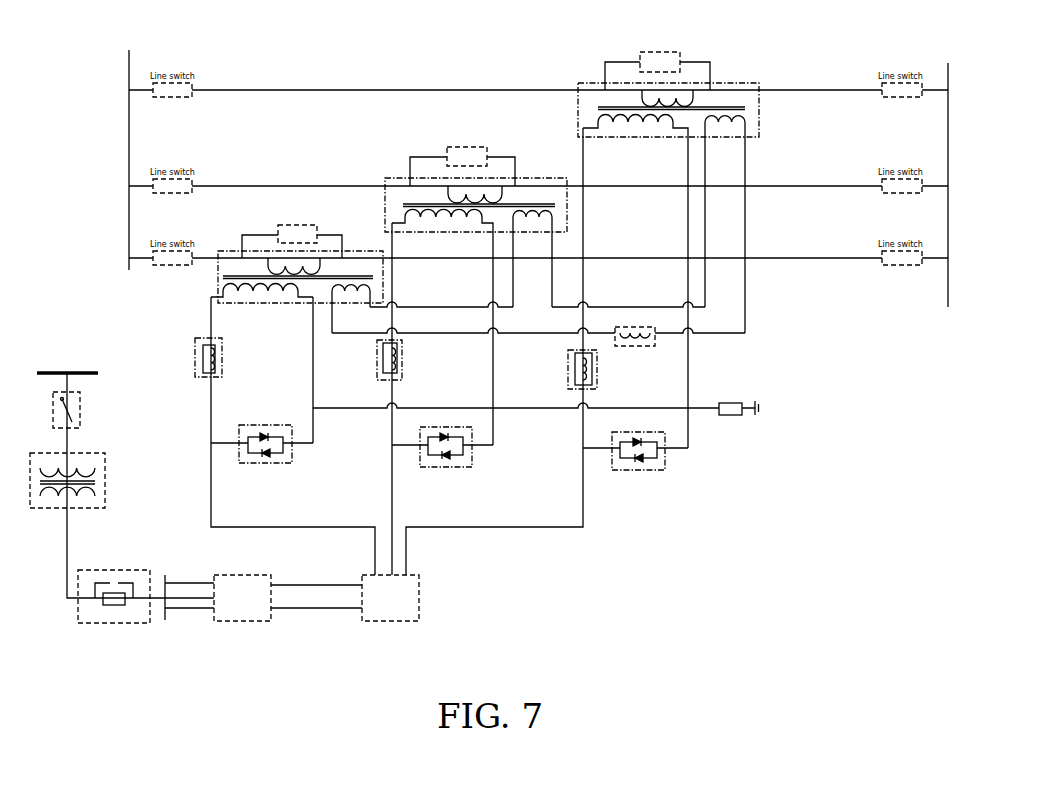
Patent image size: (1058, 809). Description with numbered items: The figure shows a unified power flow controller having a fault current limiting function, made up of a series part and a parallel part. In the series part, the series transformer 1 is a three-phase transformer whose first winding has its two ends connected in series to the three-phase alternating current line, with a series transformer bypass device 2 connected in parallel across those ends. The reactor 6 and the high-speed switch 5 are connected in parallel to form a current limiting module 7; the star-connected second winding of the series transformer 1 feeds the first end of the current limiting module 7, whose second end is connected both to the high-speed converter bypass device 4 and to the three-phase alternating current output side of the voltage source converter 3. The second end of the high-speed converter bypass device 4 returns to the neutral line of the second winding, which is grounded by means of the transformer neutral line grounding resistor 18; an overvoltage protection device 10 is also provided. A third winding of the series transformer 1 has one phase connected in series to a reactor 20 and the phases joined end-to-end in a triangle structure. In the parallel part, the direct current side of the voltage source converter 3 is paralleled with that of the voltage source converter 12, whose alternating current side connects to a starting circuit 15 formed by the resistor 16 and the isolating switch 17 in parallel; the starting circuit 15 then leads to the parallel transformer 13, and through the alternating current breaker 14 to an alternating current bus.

The series transformer 1 is at (215, 288).
The series transformer bypass device 2 is at (305, 225).
The voltage source converter 3 is at (360, 612).
The high-speed converter bypass device 4 is at (296, 448).
The high-speed switch 5 is at (203, 355).
The reactor 6 is at (215, 352).
The current limiting module 7 is at (195, 375).
The overvoltage protection device 10 is at (764, 408).
The voltage source converter 12 is at (237, 622).
The parallel transformer 13 is at (95, 485).
The alternating current breaker 14 is at (80, 425).
The starting circuit 15 is at (100, 628).
The resistor 16 is at (112, 605).
The isolating switch 17 is at (115, 580).
The transformer neutral line grounding resistor 18 is at (732, 423).
The reactor 20 is at (640, 347).